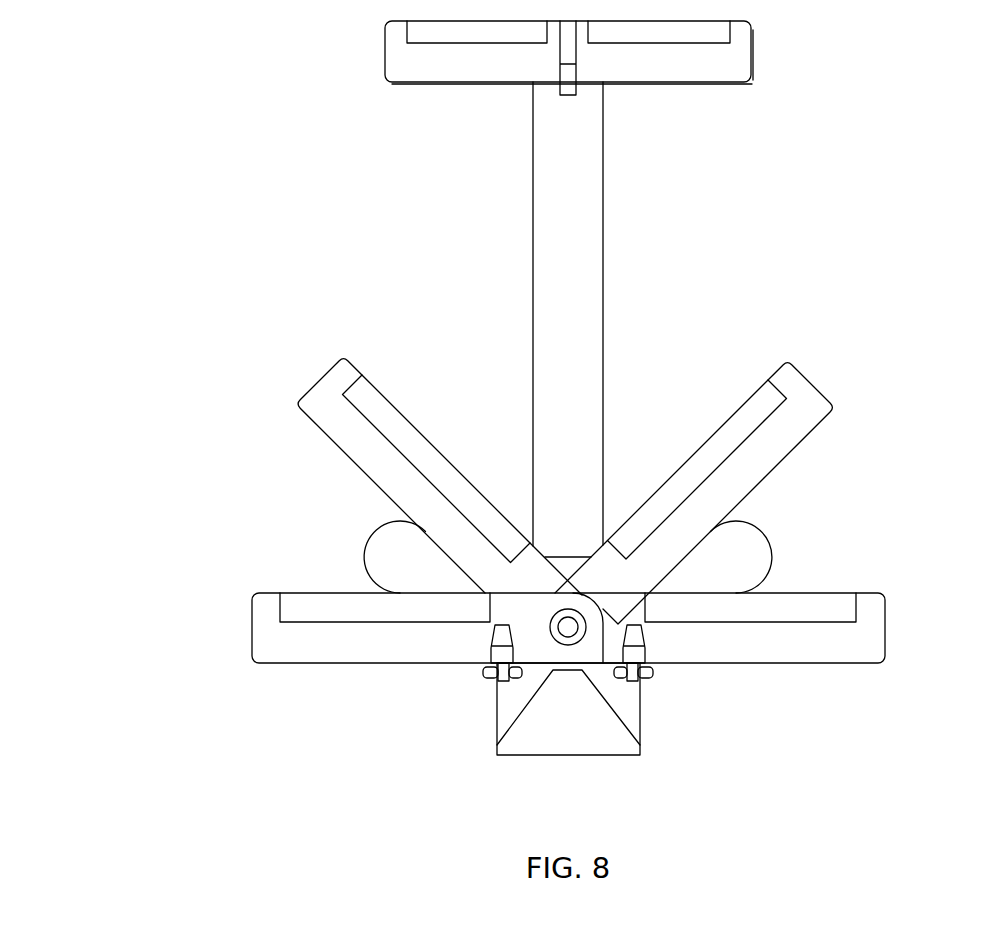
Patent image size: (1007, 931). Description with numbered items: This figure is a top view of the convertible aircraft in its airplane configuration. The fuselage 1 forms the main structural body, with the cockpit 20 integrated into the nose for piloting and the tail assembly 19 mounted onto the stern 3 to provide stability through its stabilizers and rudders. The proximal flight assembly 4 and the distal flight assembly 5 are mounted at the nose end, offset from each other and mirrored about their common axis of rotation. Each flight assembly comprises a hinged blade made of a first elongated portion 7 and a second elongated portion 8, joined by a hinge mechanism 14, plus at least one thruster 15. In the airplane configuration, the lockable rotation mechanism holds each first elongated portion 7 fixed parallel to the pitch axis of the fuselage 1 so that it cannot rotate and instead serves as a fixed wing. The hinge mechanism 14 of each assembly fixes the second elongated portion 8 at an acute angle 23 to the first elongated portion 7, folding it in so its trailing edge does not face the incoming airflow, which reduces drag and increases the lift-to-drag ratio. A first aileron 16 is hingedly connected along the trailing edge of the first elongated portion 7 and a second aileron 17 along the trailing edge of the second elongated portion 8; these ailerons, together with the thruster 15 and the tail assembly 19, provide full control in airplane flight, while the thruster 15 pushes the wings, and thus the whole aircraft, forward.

The fuselage 1 is at (543, 177).
The stern 3 is at (571, 550).
The proximal flight assembly 4 is at (948, 548).
The distal flight assembly 5 is at (162, 548).
The first elongated portion 7 is at (260, 636).
The second elongated portion 8 is at (322, 381).
The hinge mechanism 14 is at (608, 598).
The thruster 15 is at (497, 656).
The first aileron 16 is at (315, 600).
The second aileron 17 is at (422, 440).
The tail assembly 19 is at (397, 64).
The cockpit 20 is at (503, 748).
The acute angle 23 is at (367, 545).